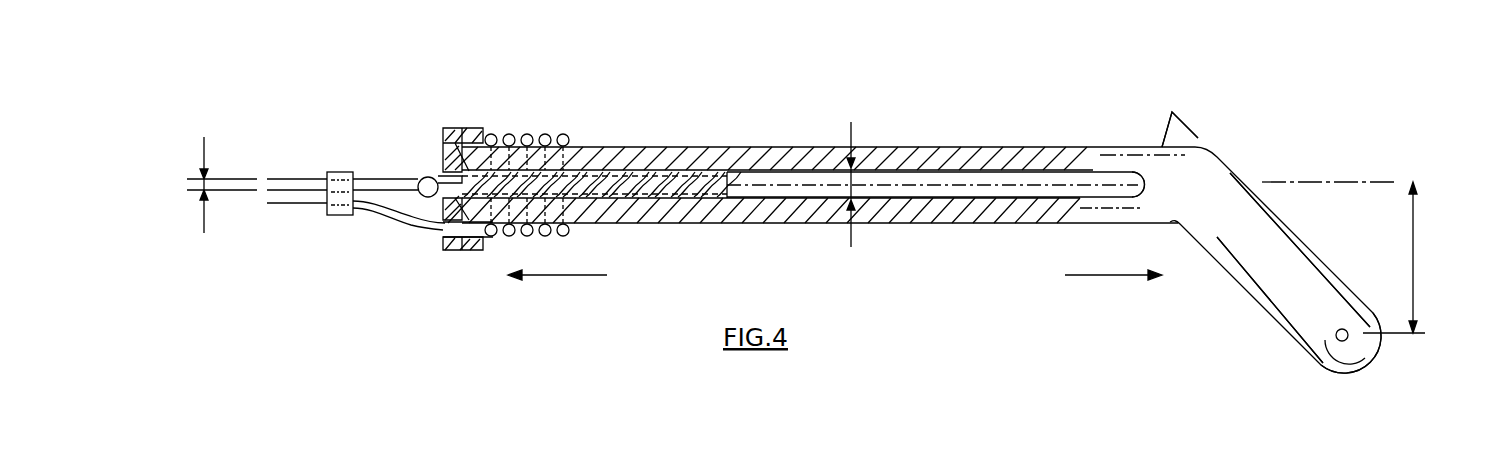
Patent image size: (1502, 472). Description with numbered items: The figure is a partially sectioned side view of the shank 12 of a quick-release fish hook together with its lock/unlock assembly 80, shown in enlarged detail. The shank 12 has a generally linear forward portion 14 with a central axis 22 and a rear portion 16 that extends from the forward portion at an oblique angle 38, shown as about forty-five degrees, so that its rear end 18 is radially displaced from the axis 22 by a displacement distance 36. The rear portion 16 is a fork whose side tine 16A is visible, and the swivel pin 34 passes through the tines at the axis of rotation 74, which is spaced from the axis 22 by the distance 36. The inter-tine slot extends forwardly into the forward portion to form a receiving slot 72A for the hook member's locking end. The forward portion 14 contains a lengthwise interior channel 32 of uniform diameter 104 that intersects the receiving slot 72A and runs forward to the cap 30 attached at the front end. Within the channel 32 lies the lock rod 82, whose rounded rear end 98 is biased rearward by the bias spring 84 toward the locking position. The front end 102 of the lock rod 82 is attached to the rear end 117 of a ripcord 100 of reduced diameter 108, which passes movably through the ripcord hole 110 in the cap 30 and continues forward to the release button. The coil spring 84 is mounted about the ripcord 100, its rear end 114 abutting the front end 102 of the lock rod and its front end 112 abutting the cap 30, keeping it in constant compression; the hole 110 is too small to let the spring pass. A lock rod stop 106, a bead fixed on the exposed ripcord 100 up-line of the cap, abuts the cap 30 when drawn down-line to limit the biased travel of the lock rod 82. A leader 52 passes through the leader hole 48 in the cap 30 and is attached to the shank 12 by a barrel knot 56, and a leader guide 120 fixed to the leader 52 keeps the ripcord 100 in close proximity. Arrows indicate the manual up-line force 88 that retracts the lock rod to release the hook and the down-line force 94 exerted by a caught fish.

The shank 12 is at (1283, 79).
The forward portion 14 is at (824, 218).
The rear portion 16 is at (1355, 148).
The side tine 16A is at (1293, 268).
The rear end 18 is at (1360, 356).
The central axis 22 is at (1392, 182).
The cap 30 is at (471, 128).
The interior channel 32 is at (936, 163).
The swivel pin 34 is at (1339, 345).
The displacement distance 36 is at (1421, 250).
The oblique angle 38 is at (1161, 147).
The leader hole 48 is at (460, 250).
The leader 52 is at (294, 203).
The barrel knot 56 is at (530, 139).
The receiving slot 72A is at (1105, 162).
The axis of rotation 74 is at (1314, 335).
The lock/unlock assembly 80 is at (591, 70).
The lock rod 82 is at (986, 190).
The bias spring 84 is at (620, 152).
The up-line force 88 is at (562, 275).
The down-line force 94 is at (1101, 275).
The rear end of lock rod 98 is at (1145, 187).
The ripcord 100 is at (646, 180).
The front end of lock rod 102 is at (738, 180).
The diameter 104 is at (851, 237).
The lock rod stop 106 is at (422, 178).
The reduced diameter 108 is at (202, 147).
The ripcord hole 110 is at (446, 149).
The front end of spring 112 is at (459, 128).
The rear end of spring 114 is at (706, 225).
The rear end of ripcord 117 is at (730, 225).
The leader guide 120 is at (340, 172).